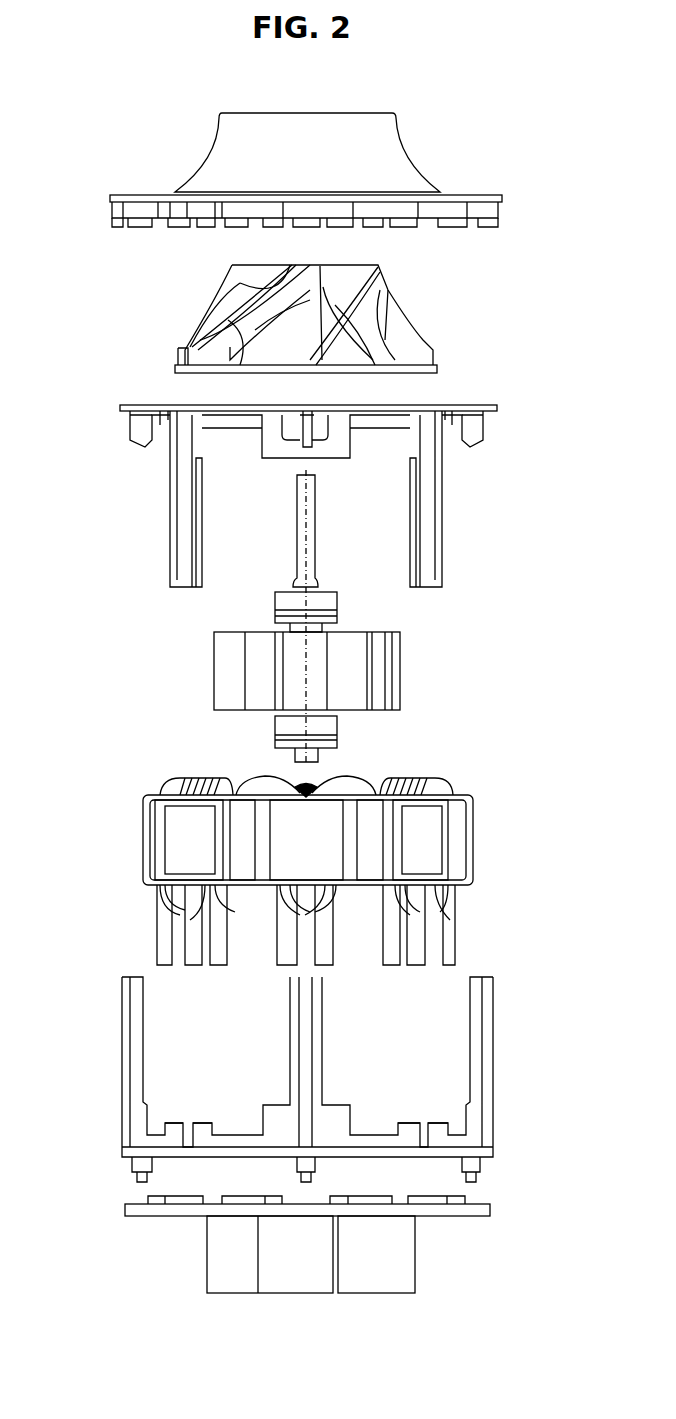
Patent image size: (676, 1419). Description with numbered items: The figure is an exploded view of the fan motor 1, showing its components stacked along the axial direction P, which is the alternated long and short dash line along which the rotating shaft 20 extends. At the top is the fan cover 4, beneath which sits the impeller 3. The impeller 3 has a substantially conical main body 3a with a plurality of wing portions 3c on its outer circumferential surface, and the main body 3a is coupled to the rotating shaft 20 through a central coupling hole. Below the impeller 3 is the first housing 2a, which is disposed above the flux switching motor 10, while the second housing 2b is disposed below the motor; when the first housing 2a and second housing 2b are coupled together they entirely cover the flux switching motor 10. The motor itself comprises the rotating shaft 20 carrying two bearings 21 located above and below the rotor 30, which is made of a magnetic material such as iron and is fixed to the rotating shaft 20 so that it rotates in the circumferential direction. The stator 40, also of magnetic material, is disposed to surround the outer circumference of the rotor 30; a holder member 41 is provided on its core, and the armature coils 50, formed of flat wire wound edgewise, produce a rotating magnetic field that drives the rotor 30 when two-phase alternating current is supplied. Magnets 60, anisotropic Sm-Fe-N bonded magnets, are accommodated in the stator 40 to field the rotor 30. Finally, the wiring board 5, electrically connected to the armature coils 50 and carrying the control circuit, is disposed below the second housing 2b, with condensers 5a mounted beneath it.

The fan motor 1 is at (62, 175).
The first housing 2a is at (122, 408).
The second housing 2b is at (122, 1142).
The impeller 3 is at (298, 331).
The main body 3a is at (197, 372).
The wing portions 3c is at (250, 340).
The fan cover 4 is at (412, 167).
The wiring board 5 is at (342, 1244).
The condensers 5a is at (256, 1270).
The axial direction P is at (317, 466).
The flux switching motor 10 is at (556, 598).
The rotating shaft 20 is at (386, 647).
The bearings 21 is at (276, 598).
The rotor 30 is at (403, 670).
The stator 40 is at (317, 853).
The holder member 41 is at (263, 870).
The armature coils 50 is at (172, 790).
The magnets 60 is at (243, 858).